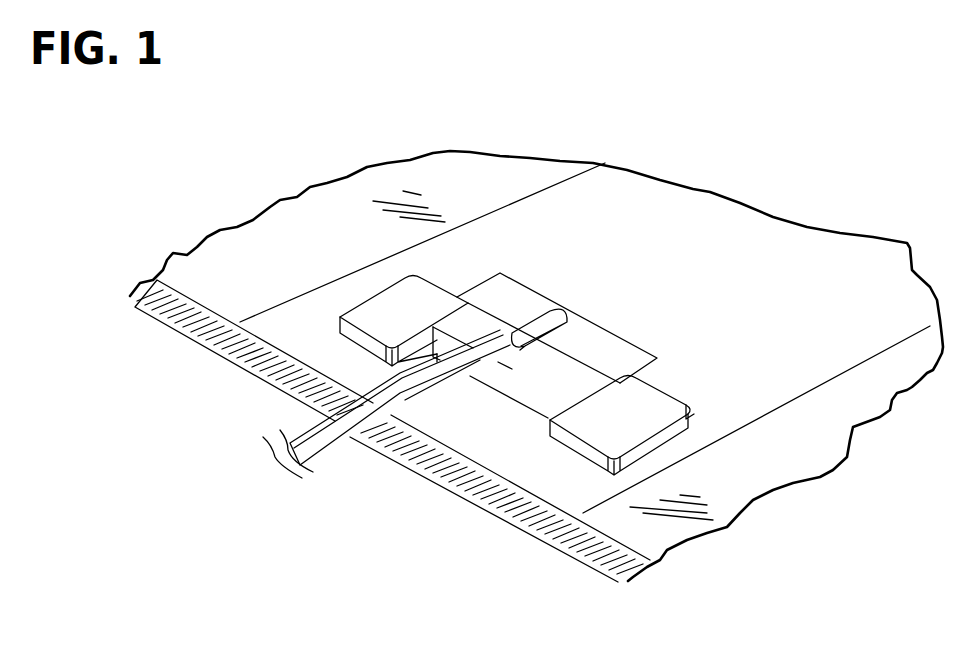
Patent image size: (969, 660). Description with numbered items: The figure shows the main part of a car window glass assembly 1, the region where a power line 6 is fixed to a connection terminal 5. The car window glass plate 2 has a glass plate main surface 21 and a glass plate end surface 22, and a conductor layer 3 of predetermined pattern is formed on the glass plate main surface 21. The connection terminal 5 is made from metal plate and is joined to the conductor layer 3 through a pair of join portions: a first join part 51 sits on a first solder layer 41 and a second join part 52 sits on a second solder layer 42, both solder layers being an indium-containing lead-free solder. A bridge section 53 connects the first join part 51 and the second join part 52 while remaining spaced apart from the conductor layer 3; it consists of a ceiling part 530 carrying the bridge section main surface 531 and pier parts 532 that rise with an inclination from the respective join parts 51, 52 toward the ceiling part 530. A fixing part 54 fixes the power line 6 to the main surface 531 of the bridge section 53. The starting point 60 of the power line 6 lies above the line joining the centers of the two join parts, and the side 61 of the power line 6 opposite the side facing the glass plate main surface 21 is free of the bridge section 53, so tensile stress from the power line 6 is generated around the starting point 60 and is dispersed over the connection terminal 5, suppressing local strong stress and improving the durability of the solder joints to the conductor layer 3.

The car window glass assembly 1 is at (664, 156).
The car window glass plate 2 is at (190, 266).
The conductor layer 3 is at (793, 292).
The connection terminal 5 is at (496, 325).
The power line 6 is at (337, 442).
The glass plate main surface 21 is at (320, 279).
The glass plate end surface 22 is at (520, 520).
The first solder layer 41 is at (673, 437).
The second solder layer 42 is at (360, 338).
The first join part 51 is at (642, 429).
The second join part 52 is at (422, 319).
The bridge section 53 is at (580, 318).
The fixing part 54 is at (527, 340).
The starting point 60 is at (515, 342).
The side opposite of the side facing the glass plate main surface 61 is at (481, 357).
The ceiling part 530 is at (437, 363).
The main surface of the bridge section 531 is at (580, 347).
The pier parts 532 is at (467, 327).